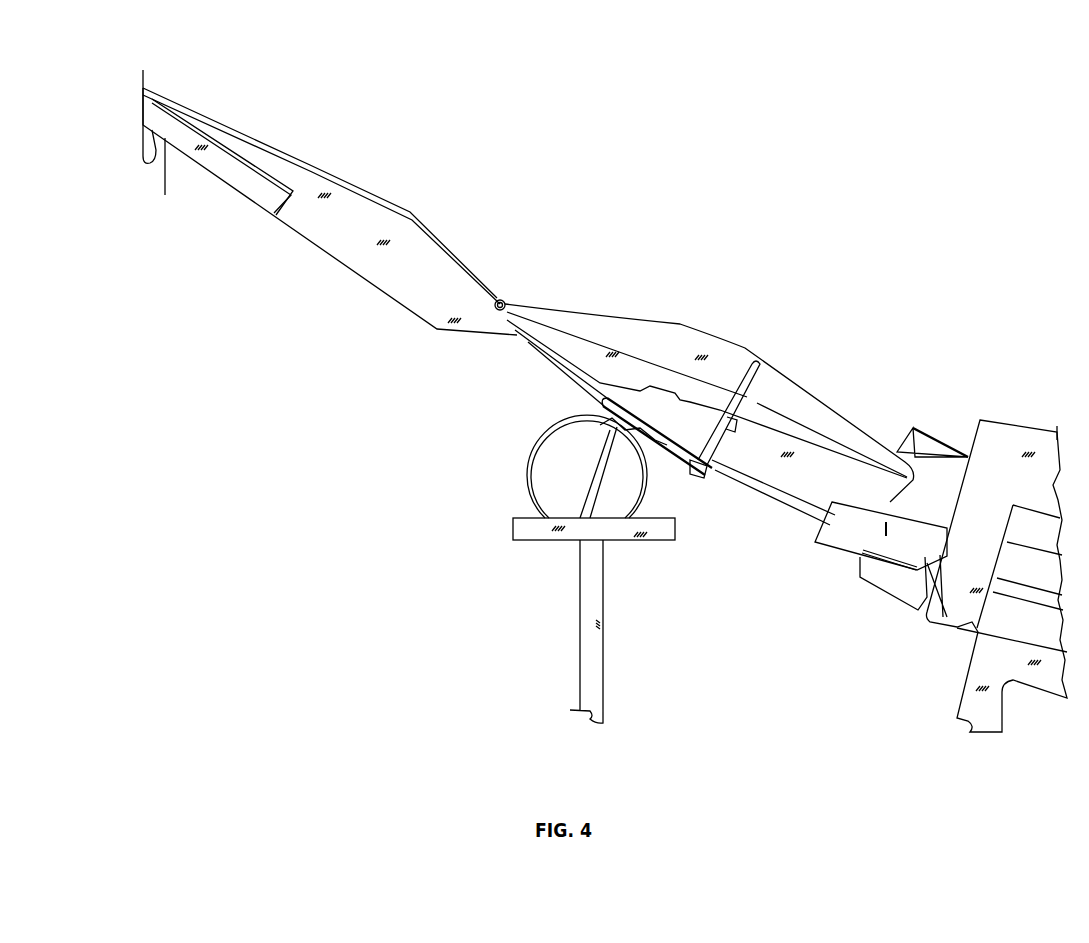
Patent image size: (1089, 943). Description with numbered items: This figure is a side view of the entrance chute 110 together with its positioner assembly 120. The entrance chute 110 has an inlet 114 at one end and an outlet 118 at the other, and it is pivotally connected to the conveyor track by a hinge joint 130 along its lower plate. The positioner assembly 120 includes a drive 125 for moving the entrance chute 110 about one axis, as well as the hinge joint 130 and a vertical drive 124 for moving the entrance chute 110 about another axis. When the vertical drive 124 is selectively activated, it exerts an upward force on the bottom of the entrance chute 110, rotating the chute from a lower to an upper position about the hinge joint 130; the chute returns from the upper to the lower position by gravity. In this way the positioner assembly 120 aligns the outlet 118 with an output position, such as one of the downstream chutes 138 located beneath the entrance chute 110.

The entrance chute 110 is at (627, 388).
The inlet 114 is at (510, 303).
The outlet 118 is at (890, 485).
The positioner assembly 120 is at (665, 438).
The vertical drive 124 is at (597, 472).
The drive 125 is at (610, 425).
The hinge joint 130 is at (502, 300).
The downstream chutes 138 is at (1010, 558).